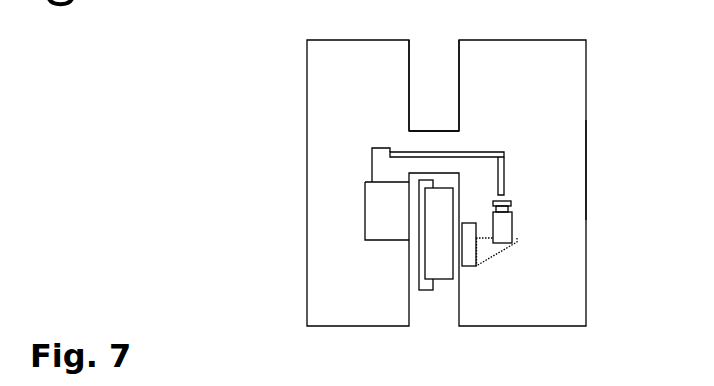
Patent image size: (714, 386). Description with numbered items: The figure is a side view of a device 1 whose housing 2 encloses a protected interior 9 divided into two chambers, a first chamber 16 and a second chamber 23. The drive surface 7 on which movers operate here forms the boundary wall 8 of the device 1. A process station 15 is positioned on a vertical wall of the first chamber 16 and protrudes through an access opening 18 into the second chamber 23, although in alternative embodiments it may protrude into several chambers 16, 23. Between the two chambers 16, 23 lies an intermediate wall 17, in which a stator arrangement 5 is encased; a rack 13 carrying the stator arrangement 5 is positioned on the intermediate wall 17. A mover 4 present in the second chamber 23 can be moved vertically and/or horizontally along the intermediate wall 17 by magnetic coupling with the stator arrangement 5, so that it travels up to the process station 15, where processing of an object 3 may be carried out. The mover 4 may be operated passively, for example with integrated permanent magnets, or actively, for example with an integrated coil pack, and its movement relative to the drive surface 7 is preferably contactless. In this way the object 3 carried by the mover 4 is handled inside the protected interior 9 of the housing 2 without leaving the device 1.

The device 1 is at (629, 69).
The housing 2 is at (307, 97).
The drive surface 7 is at (446, 183).
The boundary wall 8 is at (446, 183).
The first chamber 16 is at (370, 70).
The second chamber 23 is at (497, 70).
The intermediate wall 17 is at (422, 122).
The access opening 18 is at (457, 140).
The process station 15 is at (373, 195).
The rack 13 is at (420, 248).
The stator arrangement 5 is at (442, 261).
The mover 4 is at (468, 258).
The object 3 is at (508, 228).
The protected interior 9 is at (532, 192).